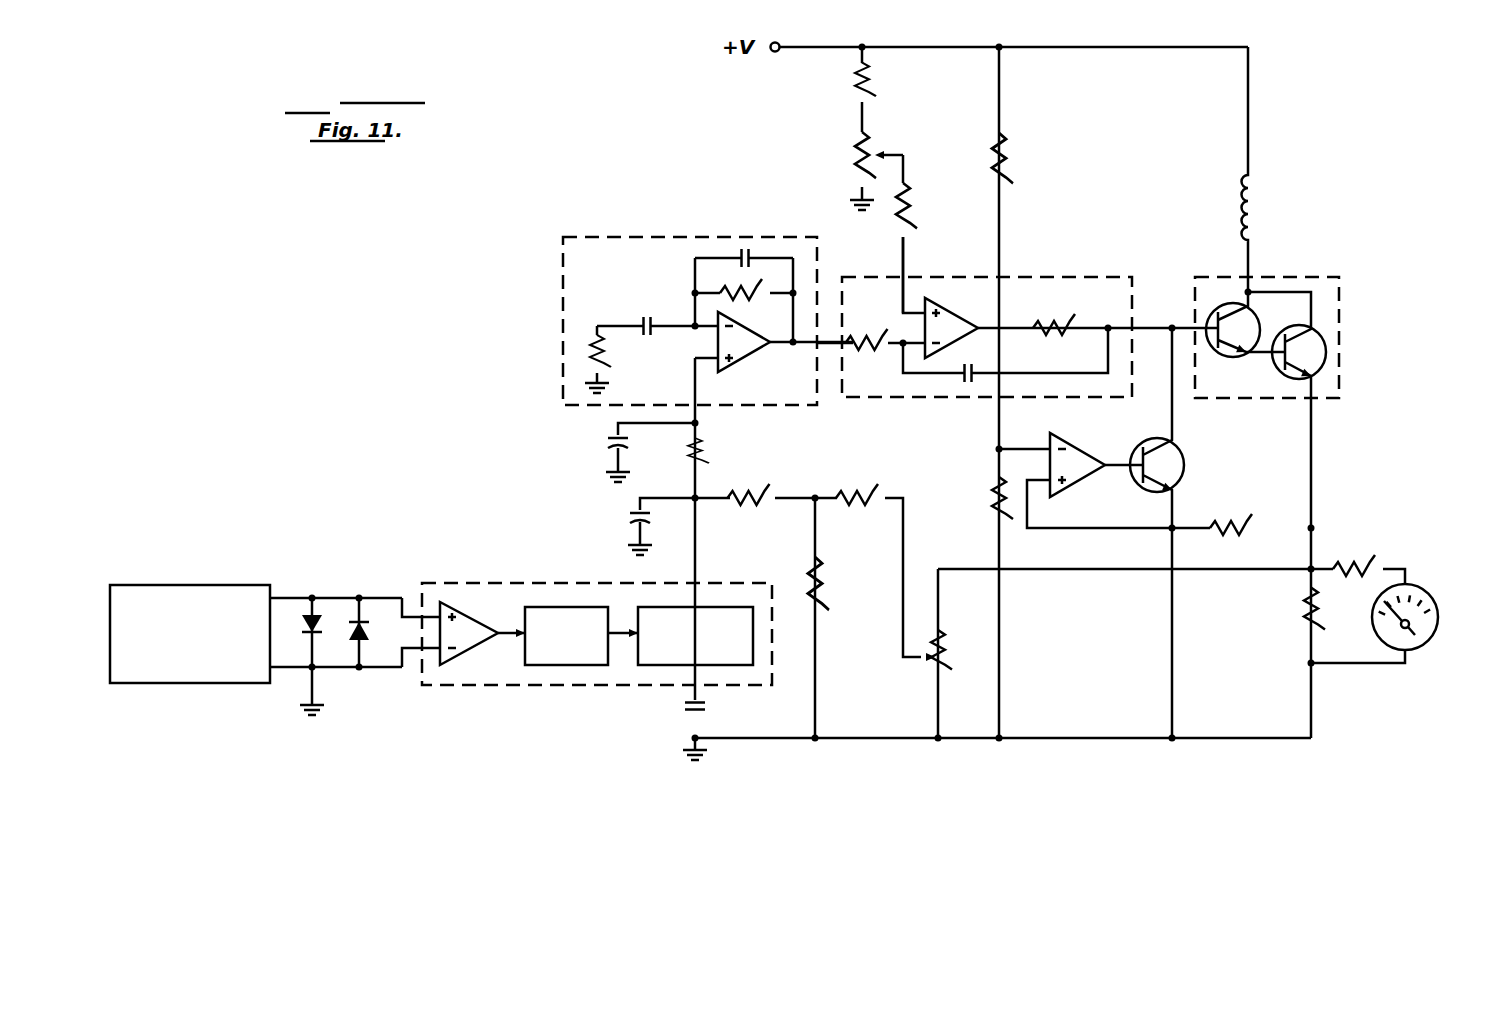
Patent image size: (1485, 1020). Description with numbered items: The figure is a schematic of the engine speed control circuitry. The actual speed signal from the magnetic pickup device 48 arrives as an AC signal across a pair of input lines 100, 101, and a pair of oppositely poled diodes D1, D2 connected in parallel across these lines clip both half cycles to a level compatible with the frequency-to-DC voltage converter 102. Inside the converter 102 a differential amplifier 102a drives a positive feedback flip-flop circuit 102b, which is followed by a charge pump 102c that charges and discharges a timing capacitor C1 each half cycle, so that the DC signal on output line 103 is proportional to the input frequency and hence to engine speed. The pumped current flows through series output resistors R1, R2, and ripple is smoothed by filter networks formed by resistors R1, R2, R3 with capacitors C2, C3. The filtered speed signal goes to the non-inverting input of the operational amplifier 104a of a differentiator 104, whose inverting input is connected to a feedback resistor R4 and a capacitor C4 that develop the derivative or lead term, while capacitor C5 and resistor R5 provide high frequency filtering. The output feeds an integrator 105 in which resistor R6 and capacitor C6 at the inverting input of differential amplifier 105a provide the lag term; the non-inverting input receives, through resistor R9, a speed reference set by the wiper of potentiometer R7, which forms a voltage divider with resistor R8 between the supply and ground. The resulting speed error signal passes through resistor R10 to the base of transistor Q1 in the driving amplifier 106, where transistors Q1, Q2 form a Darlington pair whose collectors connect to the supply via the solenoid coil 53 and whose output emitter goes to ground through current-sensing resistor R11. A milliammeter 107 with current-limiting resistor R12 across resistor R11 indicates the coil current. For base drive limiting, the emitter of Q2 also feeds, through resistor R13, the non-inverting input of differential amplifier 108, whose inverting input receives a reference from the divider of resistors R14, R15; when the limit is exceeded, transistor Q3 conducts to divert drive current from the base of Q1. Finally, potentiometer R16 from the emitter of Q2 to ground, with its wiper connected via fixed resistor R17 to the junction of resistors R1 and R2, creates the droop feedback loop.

The magnetic pickup device 48 is at (173, 582).
The input line 100 is at (298, 596).
The input line 101 is at (284, 672).
The clipping diode D1 is at (324, 610).
The clipping diode D2 is at (362, 644).
The frequency-to-DC voltage converter 102 is at (487, 583).
The differential amplifier 102a is at (460, 656).
The positive feedback flip-flop circuit 102b is at (560, 665).
The charge pump 102c is at (660, 665).
The output line 103 is at (698, 565).
The timing capacitor C1 is at (706, 708).
The filter capacitor C2 is at (628, 514).
The filter capacitor C3 is at (604, 438).
The filter resistor R3 is at (700, 458).
The differentiator 104 is at (635, 237).
The operational amplifier 104a is at (740, 358).
The capacitor C4 is at (648, 314).
The capacitor C5 is at (737, 256).
The feedback resistor R4 is at (749, 294).
The resistor R5 is at (602, 356).
The integrator 105 is at (1050, 277).
The differential amplifier 105a is at (962, 316).
The resistor R6 is at (874, 342).
The resistor R9 is at (912, 206).
The resistor R10 is at (1054, 336).
The capacitor C6 is at (956, 380).
The potentiometer R7 is at (850, 154).
The resistor R8 is at (852, 84).
The resistor R14 is at (1008, 168).
The resistor R15 is at (994, 516).
The solenoid coil 53 is at (1256, 208).
The driving amplifier 106 is at (1342, 298).
The transistor Q1 is at (1254, 318).
The transistor Q2 is at (1272, 376).
The transistor Q3 is at (1178, 456).
The differential amplifier 108 is at (1082, 484).
The resistor R13 is at (1242, 524).
The output resistor R1 is at (752, 496).
The fixed resistor R17 is at (882, 498).
The output resistor R2 is at (821, 575).
The potentiometer R16 is at (932, 672).
The current-limiting resistor R12 is at (1374, 561).
The current-sensing resistor R11 is at (1304, 602).
The milliammeter 107 is at (1448, 574).